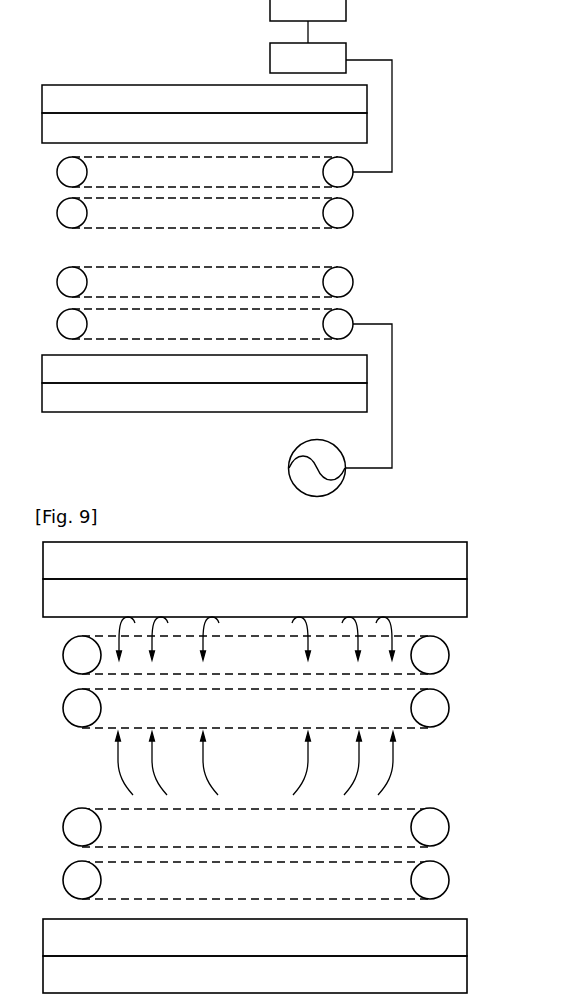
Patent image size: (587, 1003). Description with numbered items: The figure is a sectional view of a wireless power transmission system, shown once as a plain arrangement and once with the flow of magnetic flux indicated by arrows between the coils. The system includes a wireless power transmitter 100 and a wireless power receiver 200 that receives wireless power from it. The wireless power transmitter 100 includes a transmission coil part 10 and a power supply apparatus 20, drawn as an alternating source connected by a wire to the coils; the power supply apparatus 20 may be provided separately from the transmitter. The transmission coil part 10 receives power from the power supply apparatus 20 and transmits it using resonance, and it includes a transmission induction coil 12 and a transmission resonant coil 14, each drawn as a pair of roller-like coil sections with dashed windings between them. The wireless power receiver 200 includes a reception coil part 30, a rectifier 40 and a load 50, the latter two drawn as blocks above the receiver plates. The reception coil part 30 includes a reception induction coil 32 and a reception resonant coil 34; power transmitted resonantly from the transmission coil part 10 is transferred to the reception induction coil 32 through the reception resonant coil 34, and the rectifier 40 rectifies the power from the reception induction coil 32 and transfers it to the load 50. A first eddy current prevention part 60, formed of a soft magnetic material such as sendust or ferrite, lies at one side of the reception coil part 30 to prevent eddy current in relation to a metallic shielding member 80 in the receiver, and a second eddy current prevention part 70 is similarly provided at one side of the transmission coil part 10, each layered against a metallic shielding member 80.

In FIG. 8, the transmission coil part 10 is at (416, 278).
In FIG. 9, the transmission coil part 10 is at (498, 825).
In FIG. 8, the transmission induction coil 12 is at (345, 320).
In FIG. 9, the transmission induction coil 12 is at (440, 882).
In FIG. 8, the transmission resonant coil 14 is at (345, 283).
In FIG. 9, the transmission resonant coil 14 is at (440, 828).
In FIG. 8, the power supply apparatus 20 is at (333, 452).
In FIG. 8, the reception coil part 30 is at (415, 185).
In FIG. 9, the reception coil part 30 is at (499, 652).
In FIG. 8, the reception induction coil 32 is at (340, 175).
In FIG. 9, the reception induction coil 32 is at (440, 655).
In FIG. 8, the reception resonant coil 34 is at (340, 213).
In FIG. 9, the reception resonant coil 34 is at (440, 710).
In FIG. 8, the rectifier 40 is at (346, 47).
In FIG. 8, the load 50 is at (346, 4).
In FIG. 8, the first eddy current prevention part 60 is at (346, 128).
In FIG. 9, the first eddy current prevention part 60 is at (467, 602).
In FIG. 8, the second eddy current prevention part 70 is at (346, 366).
In FIG. 9, the second eddy current prevention part 70 is at (467, 932).
In FIG. 8, the metallic shielding member 80 is at (346, 100).
In FIG. 9, the metallic shielding member 80 is at (467, 560).
In FIG. 8, the wireless power transmitter 100 is at (443, 300).
In FIG. 8, the wireless power receiver 200 is at (446, 200).